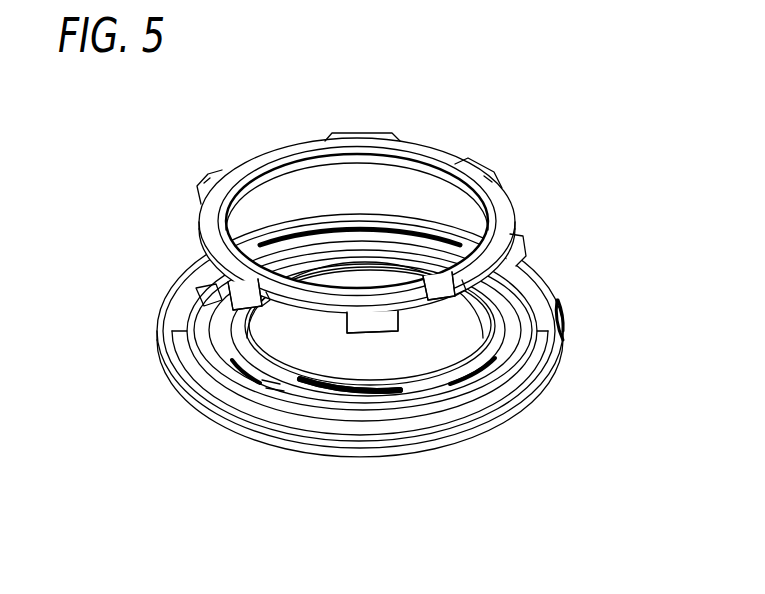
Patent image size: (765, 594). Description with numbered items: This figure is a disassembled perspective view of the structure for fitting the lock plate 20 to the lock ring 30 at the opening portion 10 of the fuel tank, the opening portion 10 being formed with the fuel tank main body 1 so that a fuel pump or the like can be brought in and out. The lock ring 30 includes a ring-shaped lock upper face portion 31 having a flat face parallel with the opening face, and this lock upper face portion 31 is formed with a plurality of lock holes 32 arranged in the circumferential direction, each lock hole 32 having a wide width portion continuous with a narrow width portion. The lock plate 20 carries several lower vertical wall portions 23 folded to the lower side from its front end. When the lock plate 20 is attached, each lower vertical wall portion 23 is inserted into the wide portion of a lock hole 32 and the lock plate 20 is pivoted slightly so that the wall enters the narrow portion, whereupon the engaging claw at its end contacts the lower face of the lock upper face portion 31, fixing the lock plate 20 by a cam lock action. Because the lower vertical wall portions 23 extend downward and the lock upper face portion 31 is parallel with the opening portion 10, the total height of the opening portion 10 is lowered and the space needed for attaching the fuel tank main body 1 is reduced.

The fuel tank main body 1 is at (564, 327).
The opening portion 10 is at (503, 337).
The lock plate 20 is at (243, 167).
The lower vertical wall portion 23 is at (210, 289).
The lock ring 30 is at (200, 356).
The lock upper face portion 31 is at (266, 383).
The lock hole 32 is at (372, 402).